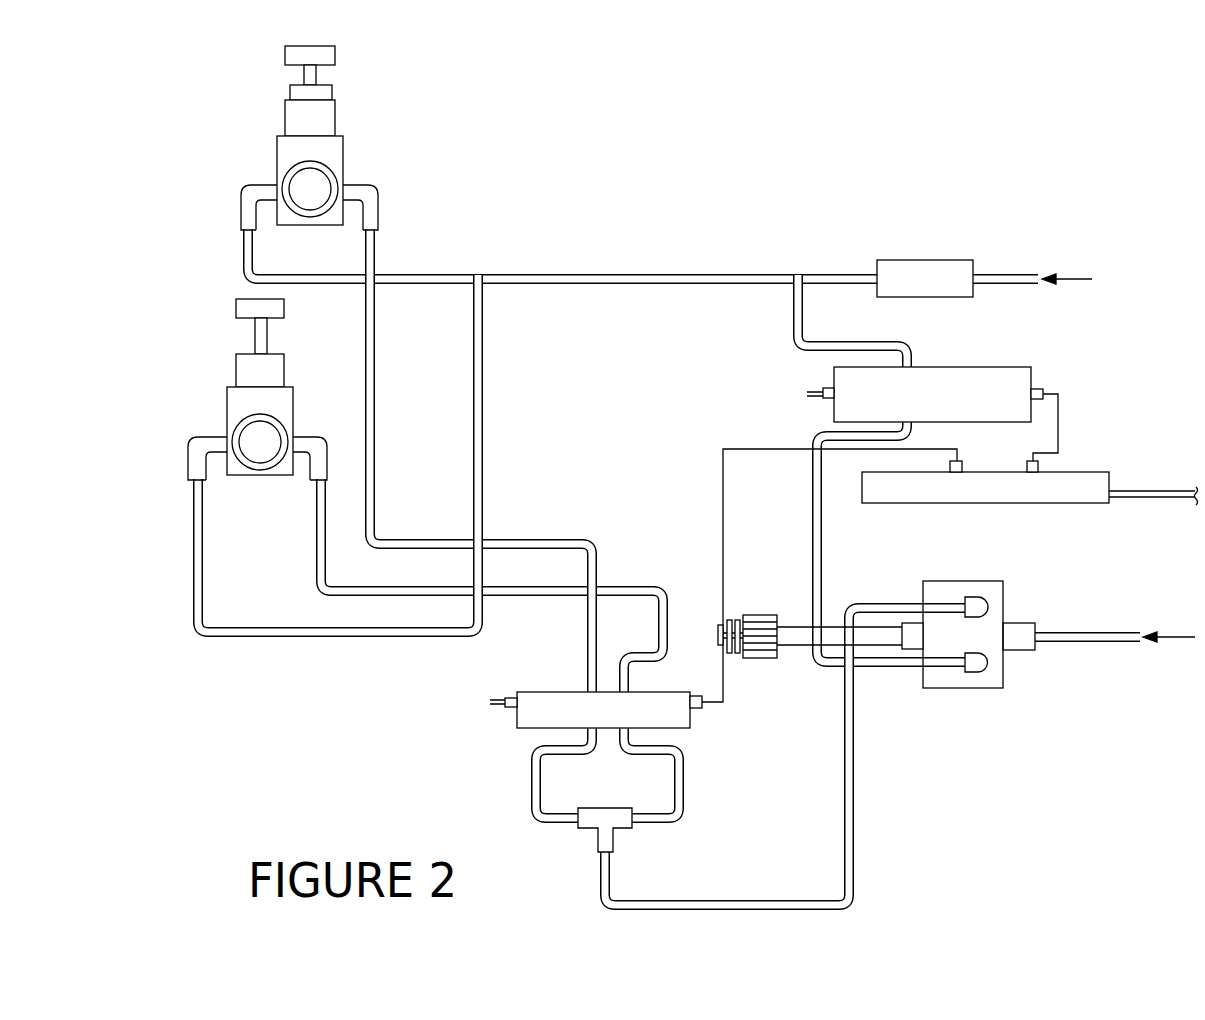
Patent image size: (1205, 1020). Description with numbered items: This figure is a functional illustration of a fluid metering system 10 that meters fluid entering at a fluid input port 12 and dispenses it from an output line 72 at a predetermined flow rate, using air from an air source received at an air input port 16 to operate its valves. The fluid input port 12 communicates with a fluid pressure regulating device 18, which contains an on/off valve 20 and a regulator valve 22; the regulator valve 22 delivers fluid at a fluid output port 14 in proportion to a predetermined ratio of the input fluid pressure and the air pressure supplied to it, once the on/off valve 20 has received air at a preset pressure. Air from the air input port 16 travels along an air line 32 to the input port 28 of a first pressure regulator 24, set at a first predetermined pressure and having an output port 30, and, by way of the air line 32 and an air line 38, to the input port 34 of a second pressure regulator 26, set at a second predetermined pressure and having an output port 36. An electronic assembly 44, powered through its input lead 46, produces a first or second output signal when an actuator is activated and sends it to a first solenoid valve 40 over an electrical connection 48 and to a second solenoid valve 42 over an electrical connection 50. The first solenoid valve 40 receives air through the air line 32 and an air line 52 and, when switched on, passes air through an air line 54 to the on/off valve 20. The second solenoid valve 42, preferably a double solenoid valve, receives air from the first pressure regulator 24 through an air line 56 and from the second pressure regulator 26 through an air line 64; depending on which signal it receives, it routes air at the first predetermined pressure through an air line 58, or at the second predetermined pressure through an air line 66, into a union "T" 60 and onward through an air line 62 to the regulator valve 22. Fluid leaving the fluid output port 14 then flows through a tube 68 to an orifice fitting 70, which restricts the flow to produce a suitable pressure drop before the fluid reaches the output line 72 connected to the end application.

The fluid metering system 10 is at (897, 133).
The fluid input port 12 is at (1025, 640).
The fluid output port 14 is at (912, 625).
The air input port 16 is at (945, 268).
The fluid pressure regulating device 18 is at (953, 580).
The on/off valve 20 is at (978, 663).
The regulator valve 22 is at (980, 606).
The first pressure regulator 24 is at (347, 137).
The second pressure regulator 26 is at (228, 392).
The input port 28 is at (243, 198).
The output port 30 is at (378, 199).
The air line 32 is at (592, 273).
The input port 34 is at (190, 455).
The output port 36 is at (313, 440).
The air line 38 is at (483, 379).
The first solenoid valve 40 is at (1033, 376).
The second solenoid valve 42 is at (692, 716).
The electronic assembly 44 is at (1110, 500).
The input lead 46 is at (1110, 488).
The electrical connection 48 is at (1058, 428).
The electrical connection 50 is at (722, 492).
The air line 52 is at (816, 346).
The air line 54 is at (816, 548).
The air line 56 is at (378, 452).
The air line 58 is at (538, 772).
The union "T" 60 is at (605, 812).
The air line 62 is at (856, 838).
The air line 64 is at (666, 596).
The air line 66 is at (685, 778).
The tube 68 is at (793, 648).
The orifice fitting 70 is at (757, 616).
The output line 72 is at (711, 641).